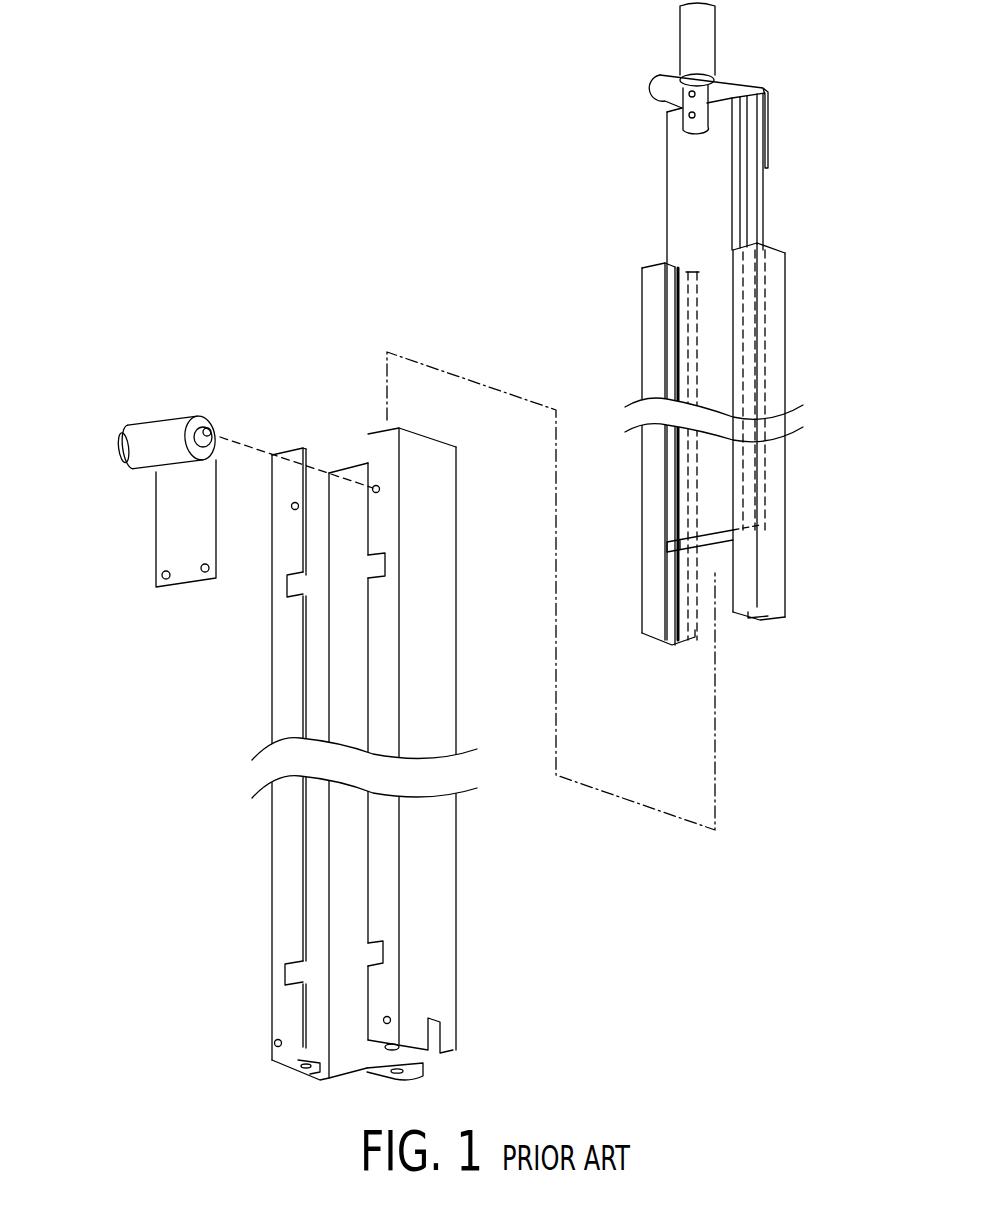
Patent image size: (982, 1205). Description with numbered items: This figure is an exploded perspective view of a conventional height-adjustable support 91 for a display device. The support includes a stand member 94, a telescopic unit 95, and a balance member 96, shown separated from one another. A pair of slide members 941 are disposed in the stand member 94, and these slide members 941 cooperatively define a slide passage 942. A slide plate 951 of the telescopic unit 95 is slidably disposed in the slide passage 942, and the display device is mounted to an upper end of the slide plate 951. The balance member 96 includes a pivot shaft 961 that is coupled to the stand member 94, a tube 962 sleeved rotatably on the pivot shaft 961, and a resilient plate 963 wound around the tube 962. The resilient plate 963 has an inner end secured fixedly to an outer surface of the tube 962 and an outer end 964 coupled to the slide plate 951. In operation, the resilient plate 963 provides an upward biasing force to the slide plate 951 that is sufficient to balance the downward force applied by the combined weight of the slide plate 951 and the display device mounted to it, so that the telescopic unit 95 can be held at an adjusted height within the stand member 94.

The height-adjustable support 91 is at (418, 152).
The stand member 94 is at (220, 707).
The slide members 941 is at (650, 300).
The slide passage 942 is at (703, 598).
The telescopic unit 95 is at (627, 158).
The slide plate 951 is at (675, 205).
The balance member 96 is at (132, 407).
The pivot shaft 961 is at (212, 427).
The tube 962 is at (200, 425).
The resilient plate 963 is at (168, 523).
The outer end 964 is at (187, 577).